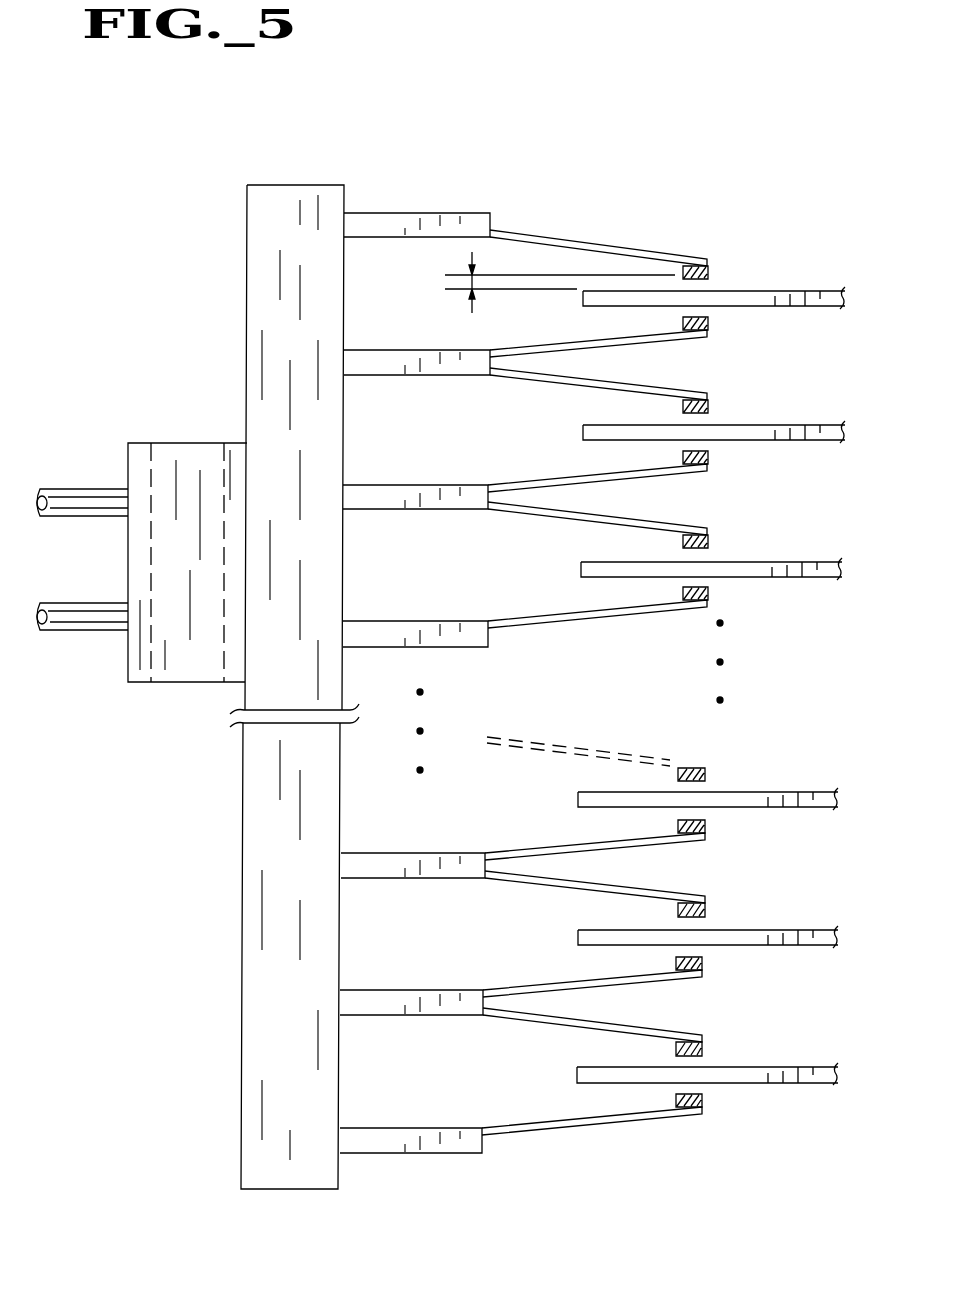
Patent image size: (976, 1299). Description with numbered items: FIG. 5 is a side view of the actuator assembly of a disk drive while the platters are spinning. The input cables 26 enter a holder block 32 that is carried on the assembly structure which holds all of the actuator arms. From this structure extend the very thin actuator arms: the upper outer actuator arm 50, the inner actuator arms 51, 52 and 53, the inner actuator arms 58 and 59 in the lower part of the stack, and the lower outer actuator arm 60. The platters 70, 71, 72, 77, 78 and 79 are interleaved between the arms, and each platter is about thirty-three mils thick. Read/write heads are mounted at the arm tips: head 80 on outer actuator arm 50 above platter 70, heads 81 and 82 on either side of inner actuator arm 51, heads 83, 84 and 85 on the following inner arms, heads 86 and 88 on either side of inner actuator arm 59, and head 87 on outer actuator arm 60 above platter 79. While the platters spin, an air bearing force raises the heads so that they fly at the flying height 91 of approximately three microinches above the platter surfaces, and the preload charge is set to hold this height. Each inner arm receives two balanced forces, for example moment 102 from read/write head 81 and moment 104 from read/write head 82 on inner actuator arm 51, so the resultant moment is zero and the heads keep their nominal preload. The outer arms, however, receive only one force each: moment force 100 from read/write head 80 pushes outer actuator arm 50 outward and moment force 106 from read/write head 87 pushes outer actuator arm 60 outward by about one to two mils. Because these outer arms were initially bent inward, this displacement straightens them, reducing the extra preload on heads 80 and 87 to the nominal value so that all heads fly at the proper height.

The input optical fiber cables 26 is at (100, 498).
The fiber holder block 32 is at (183, 460).
The outer actuator arm 50 is at (404, 225).
The inner actuator arm 51 is at (430, 350).
The inner actuator arm 52 is at (470, 485).
The fiber mounting block 53 is at (457, 622).
The inner actuator arm 58 is at (440, 876).
The inner actuator arm 59 is at (428, 1015).
The outer actuator arm 60 is at (443, 1153).
The platter 70 is at (765, 292).
The platter 71 is at (772, 427).
The platter 72 is at (788, 565).
The platter 77 is at (764, 797).
The platter 78 is at (796, 932).
The platter 79 is at (773, 1070).
The read/write head 80 is at (708, 270).
The read/write head 81 is at (710, 325).
The read/write head 82 is at (710, 405).
The read/write head 83 is at (708, 458).
The read/write head 84 is at (708, 540).
The read/write head 85 is at (708, 595).
The read/write head 86 is at (702, 1048).
The read/write head 87 is at (702, 1100).
The read/write head 88 is at (702, 962).
The flying height 91 is at (448, 285).
The moment force 100 is at (583, 228).
The moment 102 is at (583, 362).
The moment 104 is at (583, 367).
The moment force 106 is at (575, 1142).